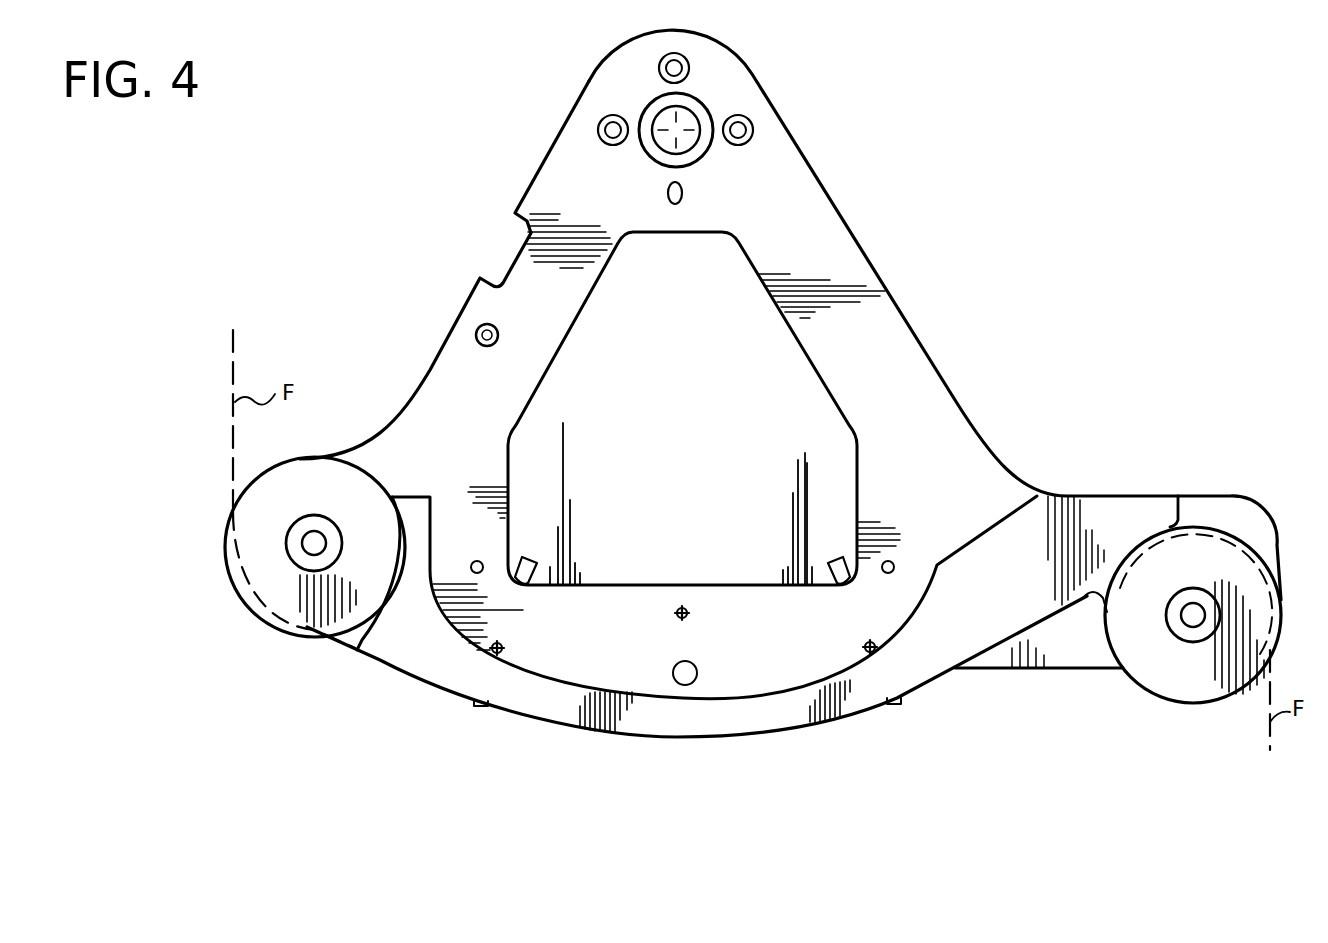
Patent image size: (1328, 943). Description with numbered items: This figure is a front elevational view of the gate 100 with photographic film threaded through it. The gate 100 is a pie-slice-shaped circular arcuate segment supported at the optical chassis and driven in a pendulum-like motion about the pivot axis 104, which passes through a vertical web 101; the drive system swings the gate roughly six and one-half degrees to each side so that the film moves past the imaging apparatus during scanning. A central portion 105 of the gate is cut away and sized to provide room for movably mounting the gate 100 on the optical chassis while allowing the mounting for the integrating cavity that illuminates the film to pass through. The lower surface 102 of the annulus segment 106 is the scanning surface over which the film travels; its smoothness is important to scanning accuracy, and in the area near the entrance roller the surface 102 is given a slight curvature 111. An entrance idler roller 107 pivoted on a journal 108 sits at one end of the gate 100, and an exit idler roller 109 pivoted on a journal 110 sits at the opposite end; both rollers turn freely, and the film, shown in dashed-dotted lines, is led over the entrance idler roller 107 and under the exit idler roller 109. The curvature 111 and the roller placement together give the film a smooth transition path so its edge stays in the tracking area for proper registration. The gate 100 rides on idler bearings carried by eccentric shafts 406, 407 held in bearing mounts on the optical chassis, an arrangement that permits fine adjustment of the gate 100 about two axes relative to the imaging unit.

The gate 100 is at (880, 151).
The vertical web 101 is at (867, 355).
The lower surface 102 is at (720, 737).
The pivot axis 104 is at (677, 128).
The central portion 105 is at (700, 485).
The annulus segment 106 is at (772, 702).
The entrance idler roller 107 is at (1177, 687).
The journal 108 is at (1193, 618).
The exit idler roller 109 is at (270, 622).
The journal 110 is at (317, 540).
The slight curvature 111 is at (1147, 532).
The eccentric shaft 406 is at (527, 557).
The eccentric shaft 407 is at (838, 557).